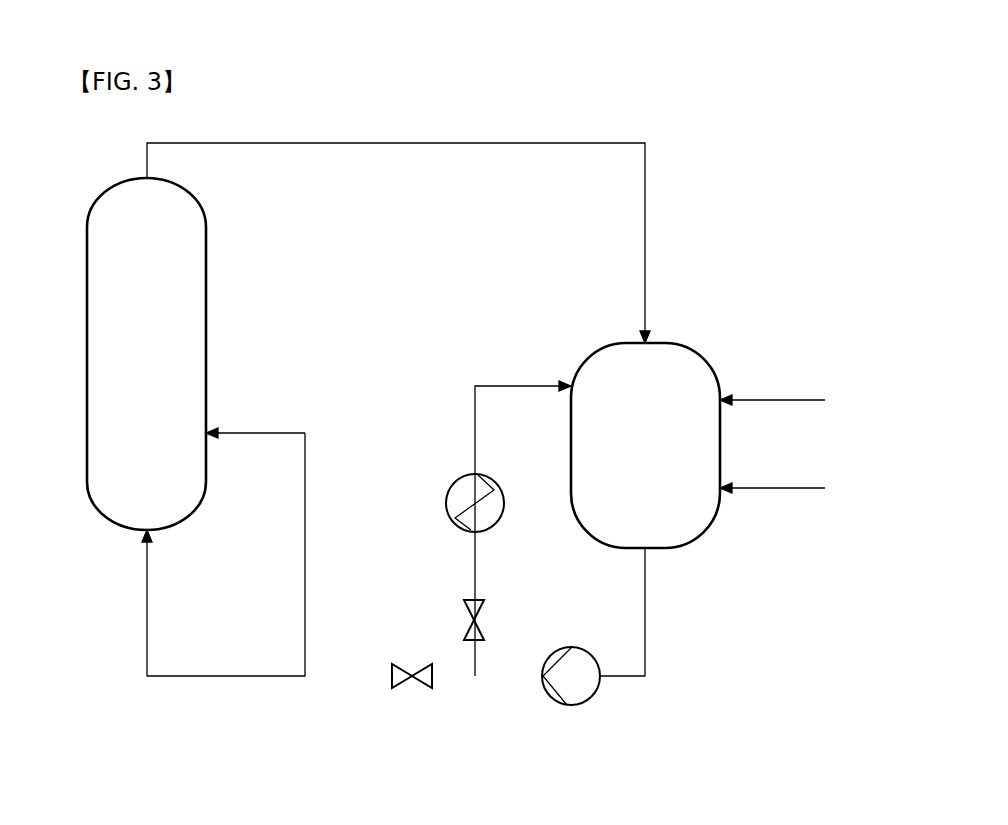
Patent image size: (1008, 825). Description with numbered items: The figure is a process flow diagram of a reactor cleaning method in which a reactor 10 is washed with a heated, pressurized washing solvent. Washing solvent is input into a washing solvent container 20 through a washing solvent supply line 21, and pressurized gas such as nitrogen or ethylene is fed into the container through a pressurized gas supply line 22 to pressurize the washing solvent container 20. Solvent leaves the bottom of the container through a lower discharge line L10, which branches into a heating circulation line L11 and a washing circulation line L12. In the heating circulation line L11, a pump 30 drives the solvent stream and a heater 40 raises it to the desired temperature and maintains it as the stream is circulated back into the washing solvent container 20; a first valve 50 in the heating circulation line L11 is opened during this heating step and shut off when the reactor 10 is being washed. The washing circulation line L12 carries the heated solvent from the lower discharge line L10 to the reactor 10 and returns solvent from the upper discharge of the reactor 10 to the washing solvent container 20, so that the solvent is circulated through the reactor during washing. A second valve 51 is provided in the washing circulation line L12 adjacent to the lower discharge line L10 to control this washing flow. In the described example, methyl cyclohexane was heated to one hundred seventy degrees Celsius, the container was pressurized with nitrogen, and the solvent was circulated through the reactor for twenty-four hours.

The reactor 10 is at (146, 354).
The washing solvent container 20 is at (645, 445).
The washing solvent supply line 21 is at (768, 488).
The pressurized gas supply line 22 is at (768, 400).
The pump 30 is at (596, 690).
The heater 40 is at (460, 478).
The first valve 50 is at (484, 615).
The second valve 51 is at (400, 666).
The lower discharge line L10 is at (647, 578).
The heating circulation line L11 is at (527, 386).
The washing circulation line L12 is at (395, 143).